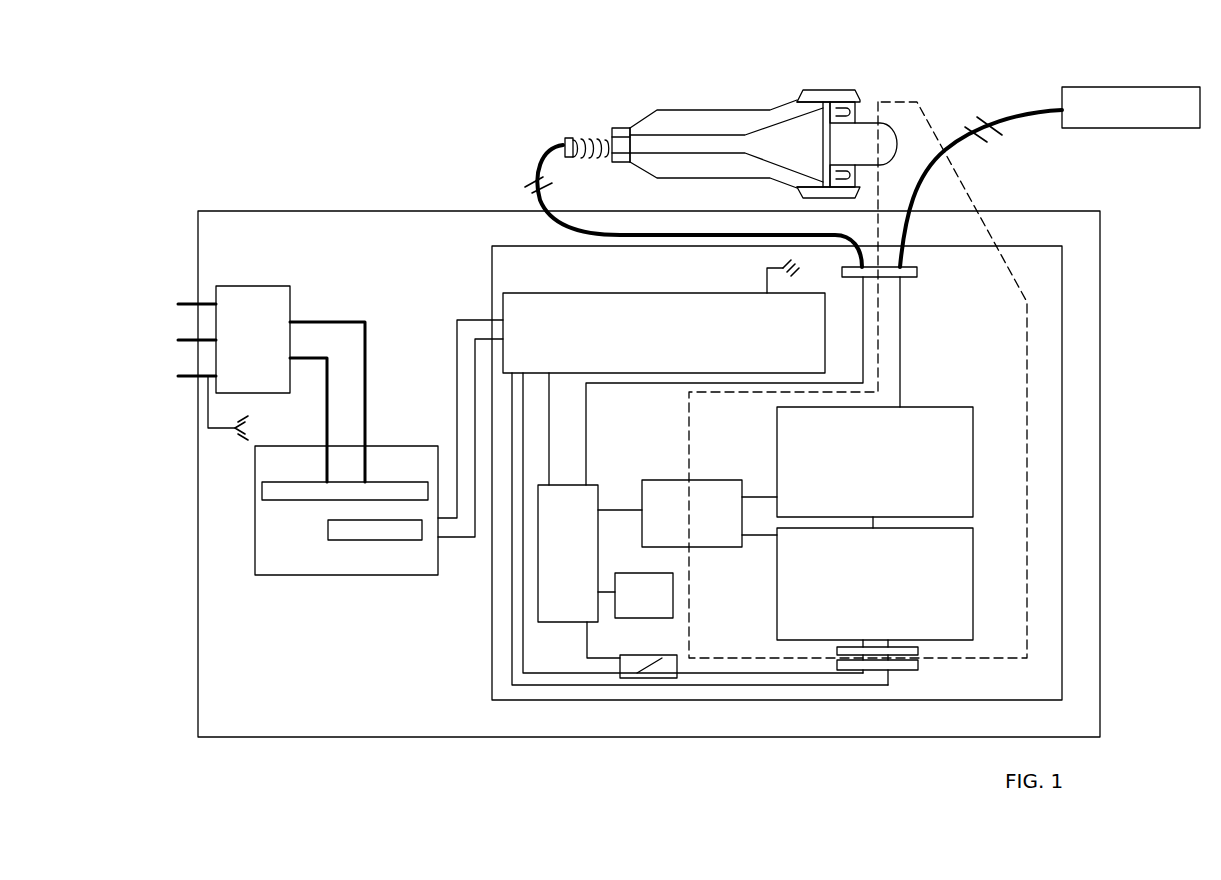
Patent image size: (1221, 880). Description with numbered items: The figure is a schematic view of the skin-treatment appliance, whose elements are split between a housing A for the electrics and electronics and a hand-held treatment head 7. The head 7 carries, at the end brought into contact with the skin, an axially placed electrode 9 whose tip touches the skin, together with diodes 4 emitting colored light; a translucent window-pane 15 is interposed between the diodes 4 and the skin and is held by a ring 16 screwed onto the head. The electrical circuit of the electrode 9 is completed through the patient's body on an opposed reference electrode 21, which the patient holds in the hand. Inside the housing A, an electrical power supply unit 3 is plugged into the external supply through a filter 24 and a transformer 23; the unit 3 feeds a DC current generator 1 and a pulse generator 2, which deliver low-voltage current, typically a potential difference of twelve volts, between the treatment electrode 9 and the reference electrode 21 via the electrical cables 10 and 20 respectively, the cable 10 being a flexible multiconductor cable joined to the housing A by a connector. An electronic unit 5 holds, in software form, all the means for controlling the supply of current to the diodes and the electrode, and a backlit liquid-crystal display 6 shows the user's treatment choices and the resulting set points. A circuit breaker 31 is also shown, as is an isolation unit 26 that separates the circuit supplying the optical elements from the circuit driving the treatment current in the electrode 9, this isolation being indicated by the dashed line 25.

The DC current generator 1 is at (962, 615).
The pulse generator 2 is at (953, 465).
The electrical power supply unit 3 is at (520, 323).
The diodes 4 is at (840, 108).
The electronic unit 5 is at (543, 590).
The display 6 is at (620, 608).
The treatment head 7 is at (803, 115).
The electrode 9 is at (860, 138).
The electrical cable 10 is at (533, 175).
The window-pane 15 is at (855, 175).
The ring 16 is at (840, 90).
The electrical cable 20 is at (1028, 108).
The reference electrode 21 is at (1093, 127).
The transformer 23 is at (318, 560).
The filter 24 is at (237, 307).
The dashed line 25 is at (1028, 320).
The isolation unit 26 is at (672, 492).
The circuit breaker 31 is at (648, 678).
The housing A is at (186, 664).